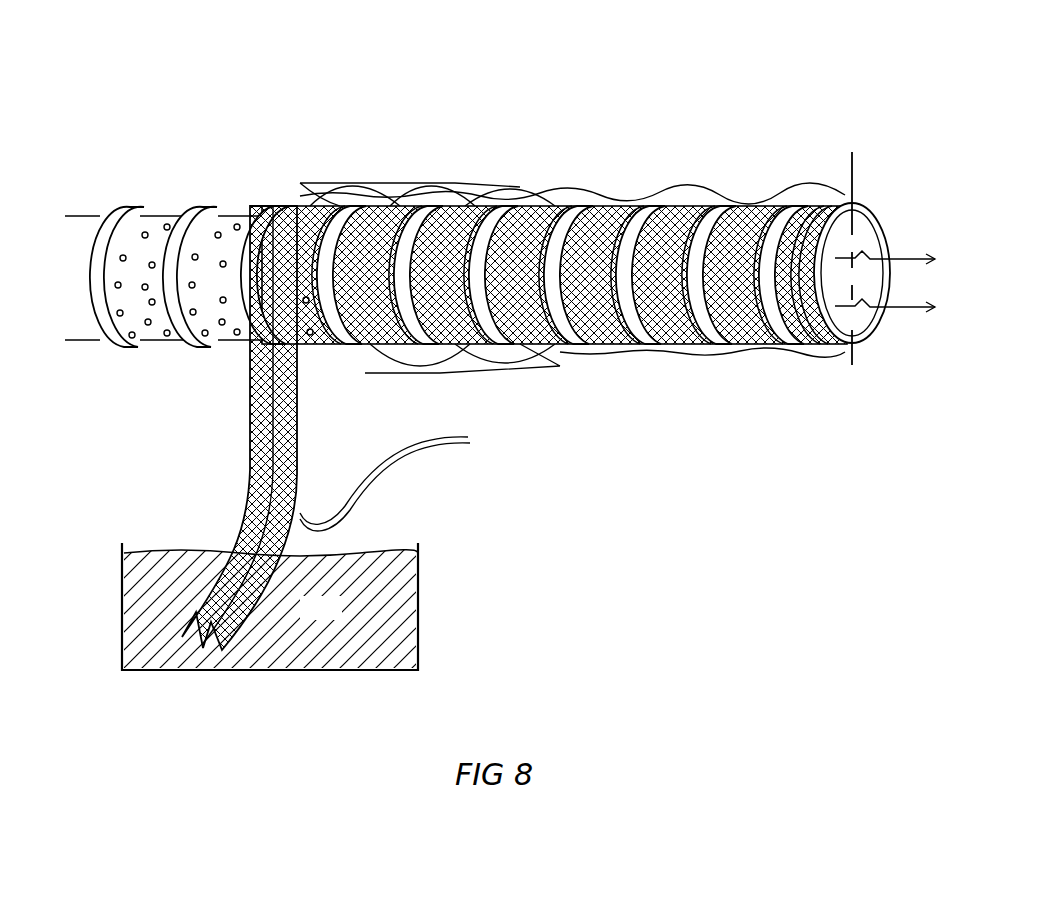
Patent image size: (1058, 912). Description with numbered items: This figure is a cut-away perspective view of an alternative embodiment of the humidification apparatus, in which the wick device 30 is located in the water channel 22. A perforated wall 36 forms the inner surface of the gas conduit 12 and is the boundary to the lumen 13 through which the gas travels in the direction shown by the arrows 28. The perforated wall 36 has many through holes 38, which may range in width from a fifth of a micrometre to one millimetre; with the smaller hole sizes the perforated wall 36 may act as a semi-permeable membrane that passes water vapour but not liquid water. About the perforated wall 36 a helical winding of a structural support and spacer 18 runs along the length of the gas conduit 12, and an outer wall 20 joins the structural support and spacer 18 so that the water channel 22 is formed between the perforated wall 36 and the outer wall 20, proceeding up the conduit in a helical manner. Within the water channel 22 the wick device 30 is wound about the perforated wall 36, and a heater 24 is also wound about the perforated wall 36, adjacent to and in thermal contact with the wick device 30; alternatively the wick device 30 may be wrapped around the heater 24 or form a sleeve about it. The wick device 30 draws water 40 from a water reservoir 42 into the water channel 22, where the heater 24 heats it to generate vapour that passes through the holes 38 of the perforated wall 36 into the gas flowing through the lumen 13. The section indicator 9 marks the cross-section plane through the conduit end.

The gas conduit 12 is at (560, 123).
The structural support and spacer 18 is at (136, 205).
The perforated wall 36 is at (229, 212).
The through holes 38 is at (190, 318).
The outer wall 20 is at (403, 180).
The water channel 22 is at (609, 190).
The wick device 30 is at (248, 405).
The heater 24 is at (505, 340).
The section line 9 is at (818, 170).
The lumen 13 is at (838, 245).
The arrows 28 is at (885, 269).
The water 40 is at (270, 607).
The water reservoir 42 is at (421, 606).